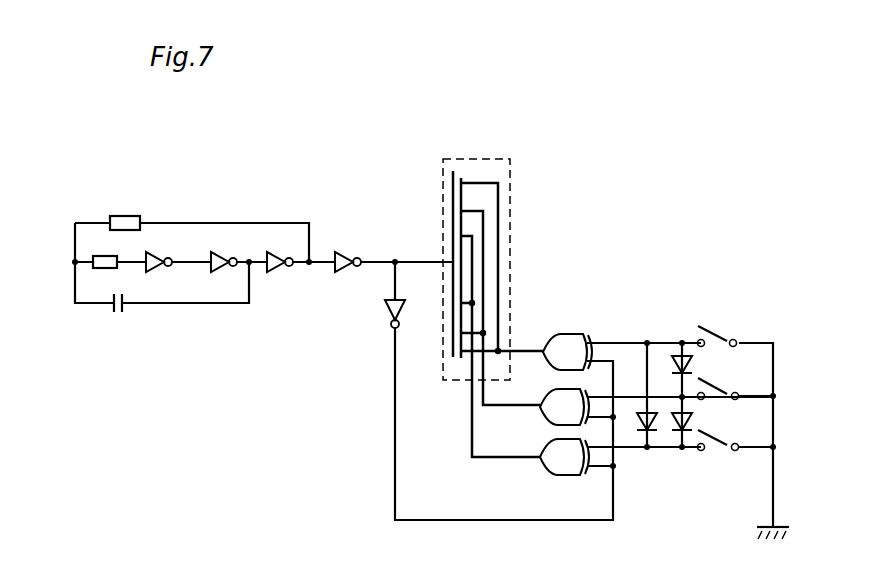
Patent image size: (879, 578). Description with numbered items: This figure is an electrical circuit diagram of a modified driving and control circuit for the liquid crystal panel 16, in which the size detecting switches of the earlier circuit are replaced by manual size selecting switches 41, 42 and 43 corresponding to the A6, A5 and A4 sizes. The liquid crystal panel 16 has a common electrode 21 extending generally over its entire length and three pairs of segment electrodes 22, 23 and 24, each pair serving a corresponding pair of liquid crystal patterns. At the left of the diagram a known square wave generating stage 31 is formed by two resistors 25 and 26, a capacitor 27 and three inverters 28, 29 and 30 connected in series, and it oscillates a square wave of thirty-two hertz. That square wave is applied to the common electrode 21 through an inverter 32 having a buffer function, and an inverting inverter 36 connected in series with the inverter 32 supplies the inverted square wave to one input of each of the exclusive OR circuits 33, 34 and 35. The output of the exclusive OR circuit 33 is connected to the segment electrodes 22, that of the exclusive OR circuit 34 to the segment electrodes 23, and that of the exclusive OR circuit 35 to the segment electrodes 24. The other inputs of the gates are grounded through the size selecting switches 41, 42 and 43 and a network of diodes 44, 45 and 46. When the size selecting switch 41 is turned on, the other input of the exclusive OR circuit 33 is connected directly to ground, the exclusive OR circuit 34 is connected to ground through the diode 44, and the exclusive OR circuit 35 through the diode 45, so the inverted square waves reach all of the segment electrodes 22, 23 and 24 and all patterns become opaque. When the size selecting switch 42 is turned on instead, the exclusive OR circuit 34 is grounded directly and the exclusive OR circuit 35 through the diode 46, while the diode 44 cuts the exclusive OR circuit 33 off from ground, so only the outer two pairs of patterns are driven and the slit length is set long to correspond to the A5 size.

The liquid crystal panel 16 is at (465, 158).
The common electrode 21 is at (453, 203).
The segment electrode 22 is at (463, 236).
The segment electrode 23 is at (463, 210).
The segment electrode 24 is at (466, 180).
The resistor 25 is at (125, 216).
The resistor 26 is at (105, 268).
The capacitor 27 is at (118, 316).
The inverter 28 is at (160, 271).
The inverter 29 is at (223, 271).
The inverter 30 is at (277, 272).
The square wave generating stage 31 is at (230, 210).
The inverter 32 is at (340, 251).
The exclusive OR circuit 33 is at (538, 462).
The exclusive OR circuit 34 is at (537, 412).
The exclusive OR circuit 35 is at (578, 333).
The inverting inverter 36 is at (383, 316).
The size selecting switch 41 is at (722, 450).
The size selecting switch 42 is at (716, 395).
The size selecting switch 43 is at (718, 327).
The diode 44 is at (674, 430).
The diode 45 is at (641, 428).
The diode 46 is at (675, 358).